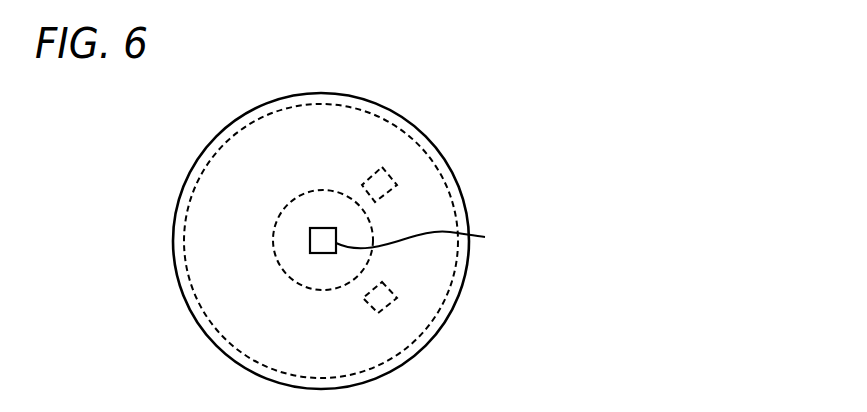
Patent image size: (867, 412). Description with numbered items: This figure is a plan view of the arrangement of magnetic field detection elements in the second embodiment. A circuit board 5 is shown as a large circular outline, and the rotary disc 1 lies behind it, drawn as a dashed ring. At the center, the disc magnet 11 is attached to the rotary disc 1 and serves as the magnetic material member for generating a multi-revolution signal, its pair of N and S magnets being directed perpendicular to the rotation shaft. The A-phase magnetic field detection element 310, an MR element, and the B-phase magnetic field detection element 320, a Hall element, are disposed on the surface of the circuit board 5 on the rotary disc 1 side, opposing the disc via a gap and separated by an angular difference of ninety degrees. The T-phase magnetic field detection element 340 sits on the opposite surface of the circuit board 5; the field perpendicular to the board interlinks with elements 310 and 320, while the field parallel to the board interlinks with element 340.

The rotary disc 1 is at (190, 199).
The circuit board 5 is at (192, 168).
The disc magnet 11 is at (289, 205).
The A-phase magnetic field detection element 310 is at (393, 180).
The B-phase magnetic field detection element 320 is at (395, 305).
The T-phase magnetic field detection element 340 is at (417, 240).